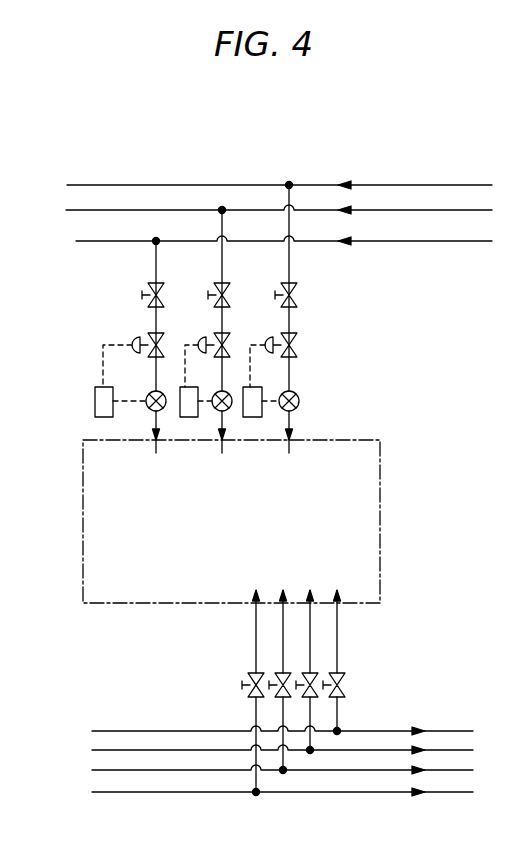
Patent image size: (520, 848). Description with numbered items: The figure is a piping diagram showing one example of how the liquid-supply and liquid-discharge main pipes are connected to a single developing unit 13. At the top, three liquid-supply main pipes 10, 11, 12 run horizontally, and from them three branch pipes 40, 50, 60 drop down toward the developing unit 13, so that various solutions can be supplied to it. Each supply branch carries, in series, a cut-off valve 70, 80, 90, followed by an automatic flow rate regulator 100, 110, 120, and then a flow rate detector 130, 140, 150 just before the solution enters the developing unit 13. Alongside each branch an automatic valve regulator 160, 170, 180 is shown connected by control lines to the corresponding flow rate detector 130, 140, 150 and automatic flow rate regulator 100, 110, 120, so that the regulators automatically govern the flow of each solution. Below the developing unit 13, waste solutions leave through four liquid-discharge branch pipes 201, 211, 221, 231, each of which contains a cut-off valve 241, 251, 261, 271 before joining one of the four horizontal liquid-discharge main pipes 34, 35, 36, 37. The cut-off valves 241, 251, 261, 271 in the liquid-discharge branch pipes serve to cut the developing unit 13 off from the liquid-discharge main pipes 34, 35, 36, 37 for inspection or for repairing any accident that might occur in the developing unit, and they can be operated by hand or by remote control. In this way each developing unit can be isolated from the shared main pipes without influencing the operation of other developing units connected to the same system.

The liquid-supply main pipe 10 is at (361, 185).
The liquid-supply main pipe 11 is at (410, 210).
The liquid-supply main pipe 12 is at (426, 241).
The developing unit 13 is at (381, 483).
The branch pipe 40 is at (290, 264).
The branch pipe 50 is at (223, 264).
The branch pipe 60 is at (157, 264).
The cut-off valve 70 is at (293, 294).
The cut-off valve 80 is at (226, 294).
The cut-off valve 90 is at (160, 294).
The automatic flow rate regulator 100 is at (296, 341).
The automatic flow rate regulator 110 is at (218, 340).
The automatic flow rate regulator 120 is at (150, 337).
The flow rate detector 130 is at (299, 401).
The flow rate detector 140 is at (216, 408).
The flow rate detector 150 is at (148, 406).
The automatic valve regulator 160 is at (272, 408).
The automatic valve regulator 170 is at (182, 387).
The automatic valve regulator 180 is at (95, 402).
The liquid-discharge branch pipe 201 is at (338, 629).
The liquid-discharge branch pipe 211 is at (312, 644).
The liquid-discharge branch pipe 221 is at (283, 630).
The liquid-discharge branch pipe 231 is at (256, 651).
The cut-off valve 241 is at (339, 685).
The cut-off valve 251 is at (312, 697).
The cut-off valve 261 is at (282, 671).
The cut-off valve 271 is at (256, 697).
The liquid-discharge main pipe 34 is at (108, 731).
The liquid-discharge main pipe 35 is at (142, 750).
The liquid-discharge main pipe 36 is at (118, 770).
The liquid-discharge main pipe 37 is at (162, 792).